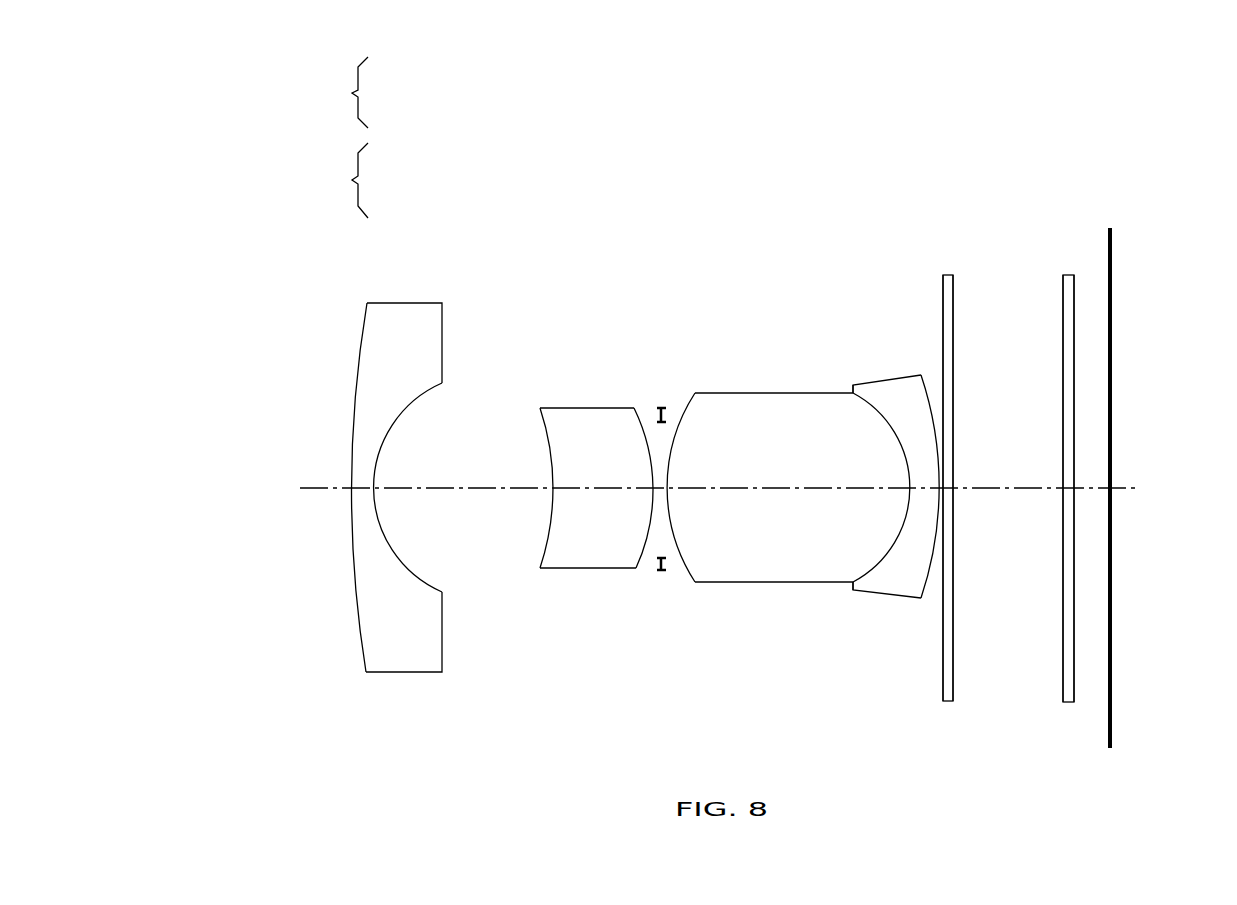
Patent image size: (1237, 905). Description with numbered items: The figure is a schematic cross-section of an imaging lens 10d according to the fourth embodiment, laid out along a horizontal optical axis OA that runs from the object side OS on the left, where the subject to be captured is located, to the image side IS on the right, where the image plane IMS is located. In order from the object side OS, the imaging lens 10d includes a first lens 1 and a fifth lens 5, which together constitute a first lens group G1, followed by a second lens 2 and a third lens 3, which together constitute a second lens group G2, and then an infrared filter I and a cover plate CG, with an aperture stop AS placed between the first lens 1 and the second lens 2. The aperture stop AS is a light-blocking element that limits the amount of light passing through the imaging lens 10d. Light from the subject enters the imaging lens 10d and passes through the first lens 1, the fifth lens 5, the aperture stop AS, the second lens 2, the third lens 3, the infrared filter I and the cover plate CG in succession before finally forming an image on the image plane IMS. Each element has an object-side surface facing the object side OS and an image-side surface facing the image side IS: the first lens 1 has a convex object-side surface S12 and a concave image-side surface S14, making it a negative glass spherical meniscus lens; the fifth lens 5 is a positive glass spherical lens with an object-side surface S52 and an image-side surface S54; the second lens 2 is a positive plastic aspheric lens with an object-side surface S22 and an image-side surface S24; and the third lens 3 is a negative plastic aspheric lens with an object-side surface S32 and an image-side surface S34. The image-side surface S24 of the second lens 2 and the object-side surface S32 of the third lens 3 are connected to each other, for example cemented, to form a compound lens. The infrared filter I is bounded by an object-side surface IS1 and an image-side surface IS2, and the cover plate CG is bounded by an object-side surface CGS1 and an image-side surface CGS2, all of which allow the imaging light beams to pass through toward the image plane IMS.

The imaging lens 10d is at (255, 92).
The first lens group G1 is at (355, 93).
The second lens group G2 is at (355, 183).
The first lens 1 is at (413, 481).
The fifth lens 5 is at (588, 490).
The second lens 2 is at (788, 493).
The third lens 3 is at (894, 494).
The aperture stop AS is at (662, 406).
The optical axis OA is at (326, 487).
The object side OS is at (252, 190).
The image side IS is at (1174, 190).
The infrared filter I is at (944, 473).
The cover plate CG is at (1056, 484).
The image plane IMS is at (1112, 300).
The object-side surface of the first lens S12 is at (365, 652).
The image-side surface of the first lens S14 is at (441, 590).
The object-side surface of the fifth lens S52 is at (547, 568).
The image-side surface of the fifth lens S54 is at (634, 568).
The object-side surface of the second lens S22 is at (693, 580).
The image-side surface of the second lens S24 is at (853, 580).
The object-side surface of the third lens S32 is at (860, 578).
The image-side surface of the third lens S34 is at (922, 598).
The object-side surface of the infrared filter IS1 is at (943, 684).
The image-side surface of the infrared filter IS2 is at (953, 692).
The object-side surface of the cover plate CGS1 is at (1063, 676).
The image-side surface of the cover plate CGS2 is at (1074, 698).